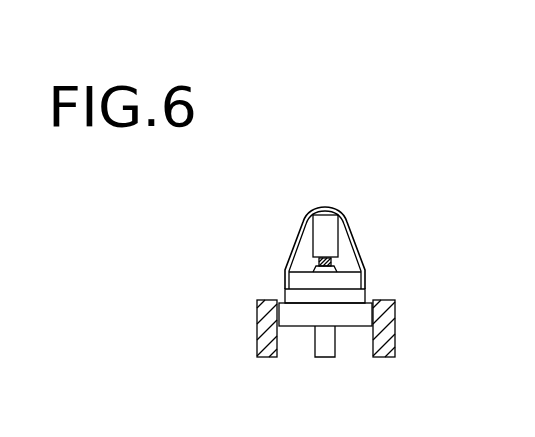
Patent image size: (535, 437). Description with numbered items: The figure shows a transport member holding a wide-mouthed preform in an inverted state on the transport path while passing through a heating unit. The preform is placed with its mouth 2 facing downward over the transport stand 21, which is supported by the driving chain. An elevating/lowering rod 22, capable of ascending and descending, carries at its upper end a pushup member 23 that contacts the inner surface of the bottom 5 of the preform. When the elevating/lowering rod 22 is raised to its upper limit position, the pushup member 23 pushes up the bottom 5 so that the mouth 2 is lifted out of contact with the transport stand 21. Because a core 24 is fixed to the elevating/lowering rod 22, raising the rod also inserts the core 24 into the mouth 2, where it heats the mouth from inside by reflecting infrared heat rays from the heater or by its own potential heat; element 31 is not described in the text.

The bottom 5 is at (334, 208).
The mouth 2 is at (364, 278).
The pushup member 23 is at (313, 230).
The core 24 is at (289, 283).
The transport stand 21 is at (368, 295).
The elevating/lowering rod 22 is at (323, 353).
The socket 31 is at (354, 350).